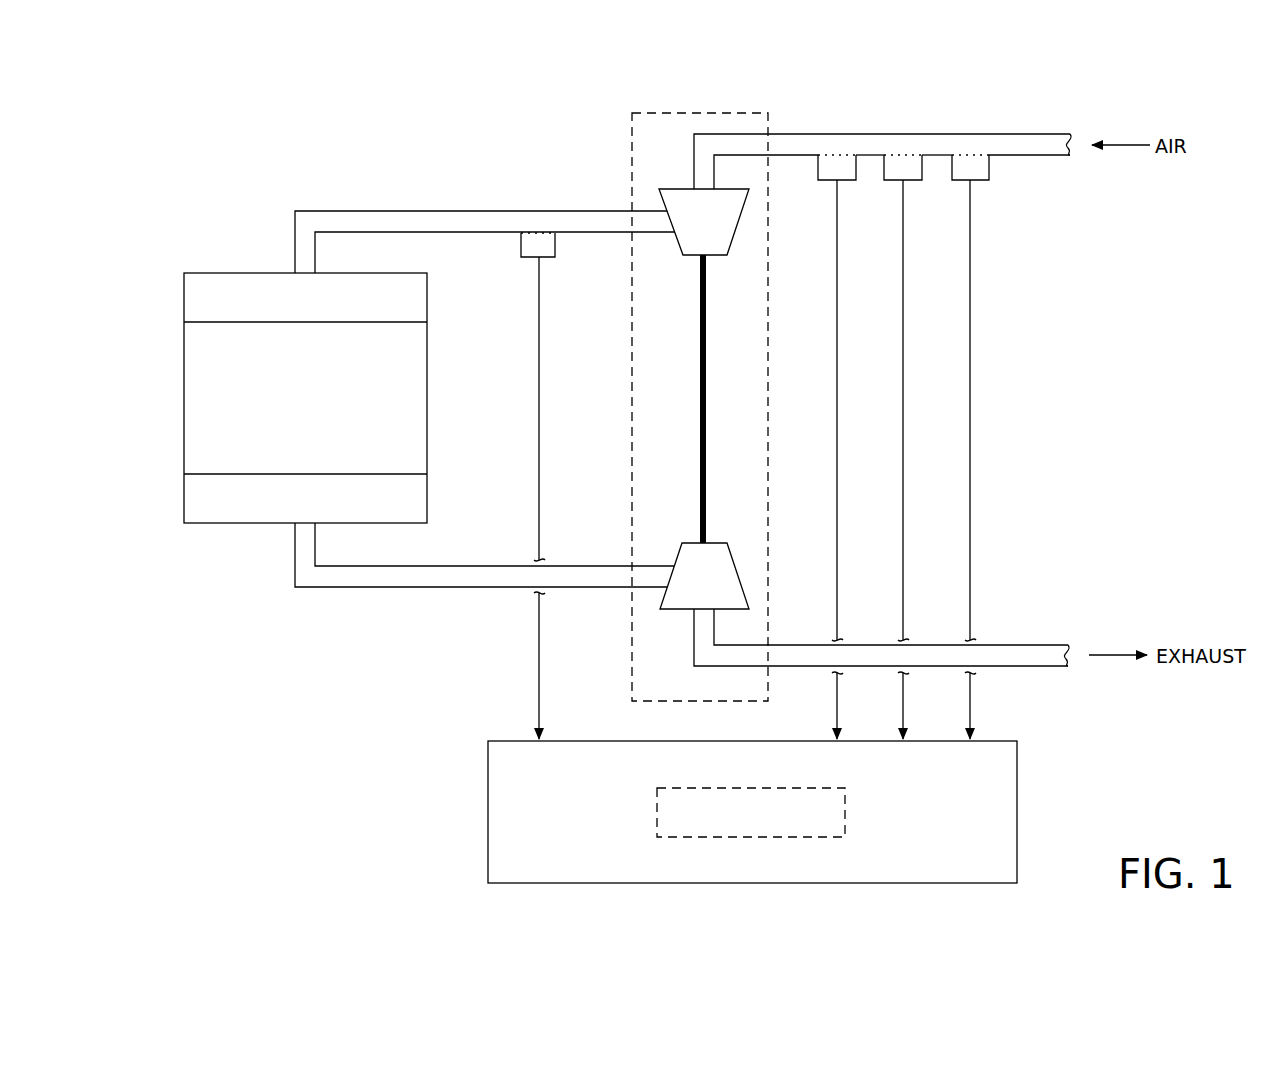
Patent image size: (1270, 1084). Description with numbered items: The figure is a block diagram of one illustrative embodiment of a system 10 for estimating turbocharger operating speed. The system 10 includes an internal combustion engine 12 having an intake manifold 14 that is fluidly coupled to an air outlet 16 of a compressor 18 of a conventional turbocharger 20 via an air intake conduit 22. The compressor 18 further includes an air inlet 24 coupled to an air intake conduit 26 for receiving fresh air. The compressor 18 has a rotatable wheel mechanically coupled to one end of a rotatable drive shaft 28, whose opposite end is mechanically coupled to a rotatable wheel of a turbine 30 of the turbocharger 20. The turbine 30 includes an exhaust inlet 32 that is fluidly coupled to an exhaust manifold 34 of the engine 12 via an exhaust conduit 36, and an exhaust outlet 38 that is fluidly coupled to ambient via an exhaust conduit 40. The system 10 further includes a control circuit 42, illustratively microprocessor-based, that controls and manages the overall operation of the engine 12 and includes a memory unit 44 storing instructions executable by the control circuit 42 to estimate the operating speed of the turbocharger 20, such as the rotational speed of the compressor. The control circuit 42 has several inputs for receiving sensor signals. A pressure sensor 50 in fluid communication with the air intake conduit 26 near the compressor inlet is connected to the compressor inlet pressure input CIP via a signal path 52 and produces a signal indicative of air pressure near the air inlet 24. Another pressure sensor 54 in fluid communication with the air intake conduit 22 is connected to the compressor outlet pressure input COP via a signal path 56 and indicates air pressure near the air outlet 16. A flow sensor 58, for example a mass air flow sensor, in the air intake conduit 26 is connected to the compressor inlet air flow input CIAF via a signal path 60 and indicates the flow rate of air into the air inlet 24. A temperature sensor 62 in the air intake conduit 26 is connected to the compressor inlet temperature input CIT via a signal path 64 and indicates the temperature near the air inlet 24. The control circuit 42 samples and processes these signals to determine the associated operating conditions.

The system for estimating turbocharger operating speed 10 is at (246, 720).
The internal combustion engine 12 is at (184, 372).
The intake manifold 14 is at (240, 273).
The air outlet 16 is at (668, 216).
The compressor 18 is at (688, 258).
The turbocharger 20 is at (768, 300).
The air intake conduit 22 is at (420, 211).
The air inlet 24 is at (703, 193).
The air intake conduit 26 is at (1045, 157).
The drive shaft 28 is at (706, 377).
The turbine 30 is at (718, 543).
The exhaust inlet 32 is at (670, 577).
The exhaust manifold 34 is at (205, 523).
The exhaust conduit 36 is at (380, 587).
The exhaust outlet 38 is at (702, 609).
The exhaust conduit 40 is at (1028, 645).
The control circuit 42 is at (1017, 820).
The memory unit 44 is at (845, 806).
The pressure sensor 50 is at (845, 181).
The signal path 52 is at (838, 424).
The pressure sensor 54 is at (548, 258).
The signal path 56 is at (539, 648).
The flow sensor 58 is at (912, 181).
The signal path 60 is at (905, 381).
The temperature sensor 62 is at (979, 181).
The signal path 64 is at (972, 338).